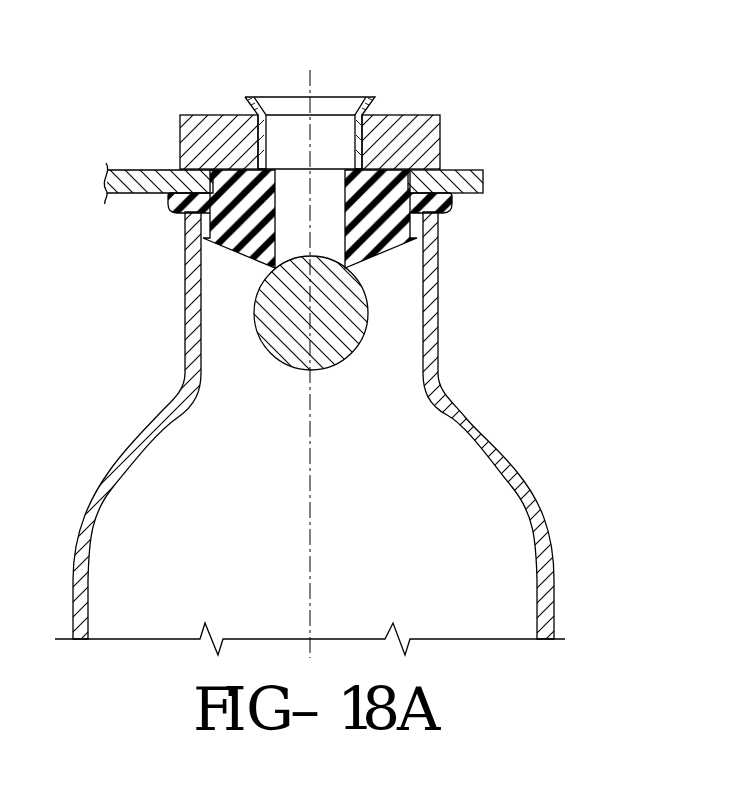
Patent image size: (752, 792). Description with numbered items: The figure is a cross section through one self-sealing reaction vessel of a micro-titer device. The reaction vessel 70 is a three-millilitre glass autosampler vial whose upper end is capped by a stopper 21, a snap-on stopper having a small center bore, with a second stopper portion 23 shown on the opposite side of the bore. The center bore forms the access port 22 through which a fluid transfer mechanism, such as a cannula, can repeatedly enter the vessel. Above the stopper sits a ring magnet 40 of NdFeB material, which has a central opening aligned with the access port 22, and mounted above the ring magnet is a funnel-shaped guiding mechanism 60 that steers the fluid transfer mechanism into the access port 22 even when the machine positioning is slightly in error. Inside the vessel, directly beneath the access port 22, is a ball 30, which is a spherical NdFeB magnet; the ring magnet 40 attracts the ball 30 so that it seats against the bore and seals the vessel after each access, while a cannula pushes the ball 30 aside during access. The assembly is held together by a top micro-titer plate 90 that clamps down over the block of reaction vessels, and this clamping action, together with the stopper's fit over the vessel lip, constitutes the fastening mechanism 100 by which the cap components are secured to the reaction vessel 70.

The stopper 21 is at (237, 247).
The access port 22 is at (331, 188).
The second clamping jaw / sealing block 23 is at (430, 257).
The ball 30 is at (283, 325).
The ring magnet 40 is at (203, 115).
The guiding mechanism 60 is at (262, 97).
The reaction vessel 70 is at (528, 495).
The top micro-titer plate 90 is at (125, 170).
The fastening mechanism 100 is at (462, 209).